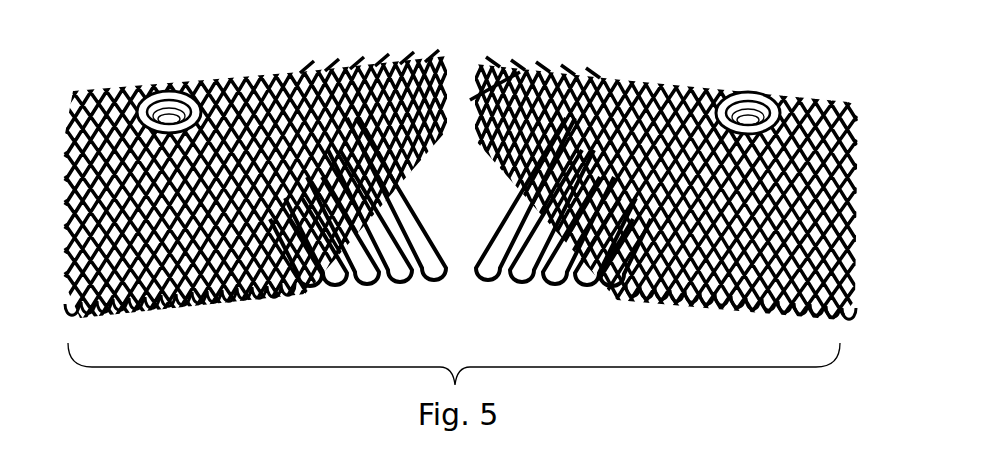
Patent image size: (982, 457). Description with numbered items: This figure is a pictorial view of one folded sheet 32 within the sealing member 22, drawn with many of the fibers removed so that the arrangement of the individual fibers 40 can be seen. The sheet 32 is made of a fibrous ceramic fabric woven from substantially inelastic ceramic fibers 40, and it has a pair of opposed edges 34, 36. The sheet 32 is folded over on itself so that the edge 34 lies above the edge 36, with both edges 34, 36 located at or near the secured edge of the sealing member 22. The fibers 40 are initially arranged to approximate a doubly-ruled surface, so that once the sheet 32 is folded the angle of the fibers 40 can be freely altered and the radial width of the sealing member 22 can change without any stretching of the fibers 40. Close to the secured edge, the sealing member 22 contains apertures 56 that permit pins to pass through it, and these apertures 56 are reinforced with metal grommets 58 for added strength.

The sealing member 22 is at (461, 203).
The folded sheet 32 is at (97, 308).
The opposed edge 34 is at (442, 50).
The opposed edge 36 is at (293, 72).
The fibers 40 is at (472, 282).
The apertures 56 is at (167, 110).
The metal grommets 58 is at (192, 103).